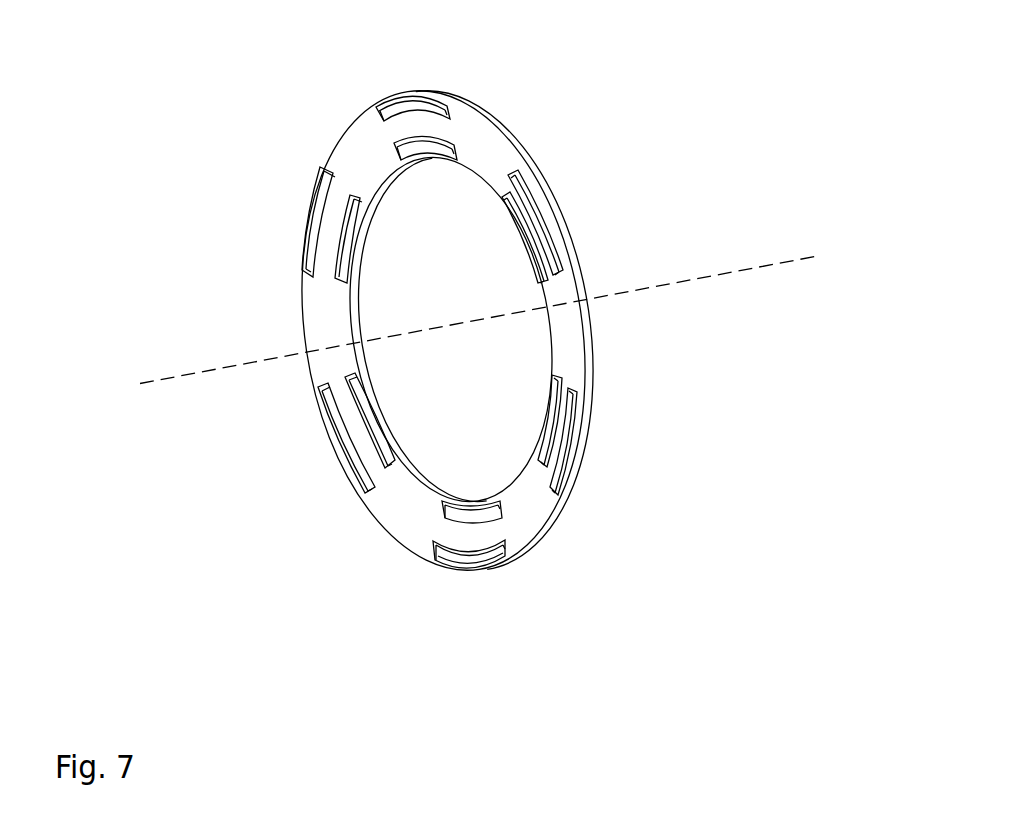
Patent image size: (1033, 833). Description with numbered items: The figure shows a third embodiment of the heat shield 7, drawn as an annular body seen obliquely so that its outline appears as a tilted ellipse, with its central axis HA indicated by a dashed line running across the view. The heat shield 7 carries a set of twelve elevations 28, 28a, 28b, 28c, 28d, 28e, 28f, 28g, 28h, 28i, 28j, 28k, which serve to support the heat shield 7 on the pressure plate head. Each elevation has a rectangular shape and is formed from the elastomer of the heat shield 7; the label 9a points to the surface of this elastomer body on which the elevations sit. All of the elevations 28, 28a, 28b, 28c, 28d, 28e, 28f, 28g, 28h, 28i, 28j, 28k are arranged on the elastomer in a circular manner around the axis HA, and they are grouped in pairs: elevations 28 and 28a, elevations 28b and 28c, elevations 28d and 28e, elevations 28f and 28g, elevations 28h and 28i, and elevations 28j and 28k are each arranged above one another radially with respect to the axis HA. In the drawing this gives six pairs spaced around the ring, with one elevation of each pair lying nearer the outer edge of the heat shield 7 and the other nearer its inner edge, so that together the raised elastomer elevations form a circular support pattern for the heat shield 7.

The heat shield 7 is at (575, 133).
The outer circumferential surface 9a is at (490, 128).
The elevation 28 is at (540, 218).
The elevation 28a is at (548, 284).
The elevation 28b is at (565, 378).
The elevation 28c is at (566, 490).
The elevation 28d is at (503, 518).
The elevation 28e is at (457, 568).
The elevation 28f is at (342, 463).
The elevation 28g is at (347, 377).
The elevation 28h is at (347, 284).
The elevation 28i is at (322, 168).
The elevation 28j is at (395, 150).
The elevation 28k is at (384, 108).
The axis HA is at (213, 372).